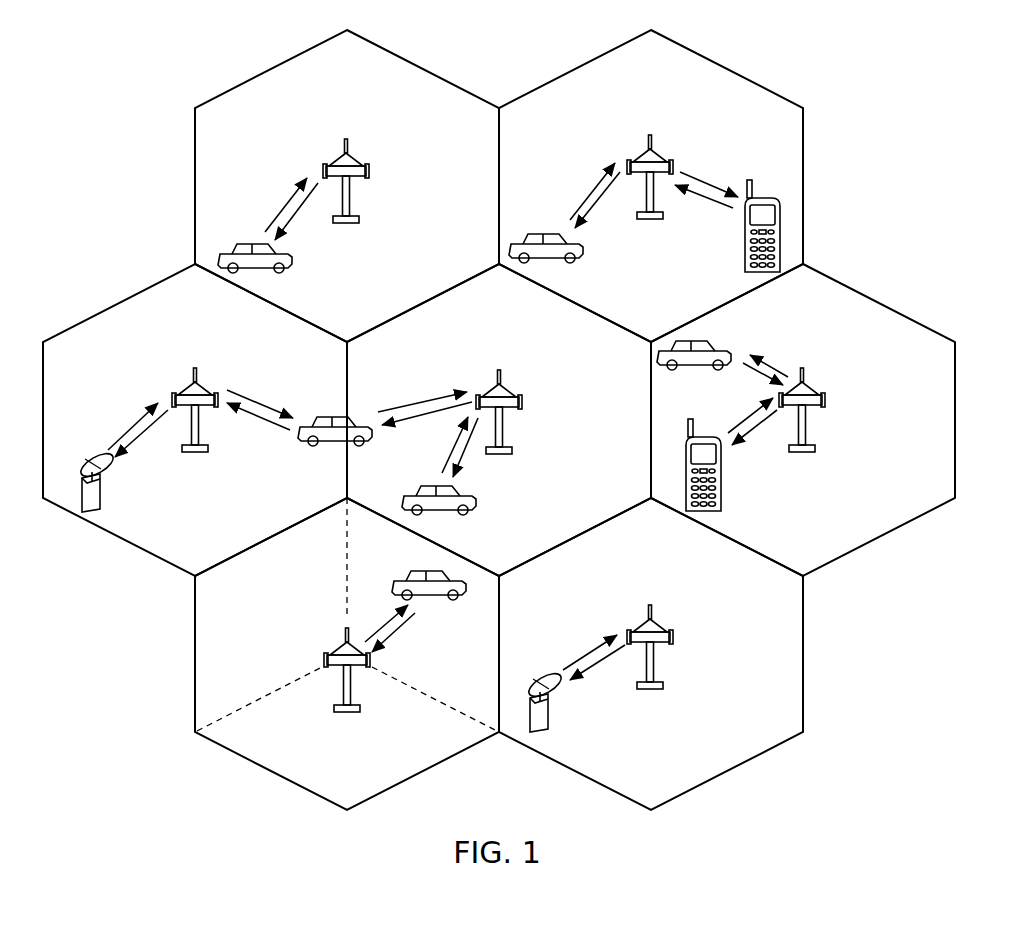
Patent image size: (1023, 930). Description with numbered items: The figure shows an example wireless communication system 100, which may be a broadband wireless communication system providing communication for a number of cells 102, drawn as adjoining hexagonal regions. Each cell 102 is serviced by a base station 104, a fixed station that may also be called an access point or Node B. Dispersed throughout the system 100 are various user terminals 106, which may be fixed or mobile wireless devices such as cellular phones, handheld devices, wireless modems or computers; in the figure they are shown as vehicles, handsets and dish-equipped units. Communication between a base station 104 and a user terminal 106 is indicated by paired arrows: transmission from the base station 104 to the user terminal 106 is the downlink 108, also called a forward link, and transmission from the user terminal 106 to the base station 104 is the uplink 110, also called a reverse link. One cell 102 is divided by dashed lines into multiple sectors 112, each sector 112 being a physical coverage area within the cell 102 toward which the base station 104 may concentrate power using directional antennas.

The wireless communication system 100 is at (941, 110).
The cell 102 is at (277, 64).
The base station 104 is at (346, 139).
The user terminal 106 is at (294, 266).
The downlink 108 is at (298, 220).
The uplink 110 is at (284, 205).
The sector 112 is at (400, 770).